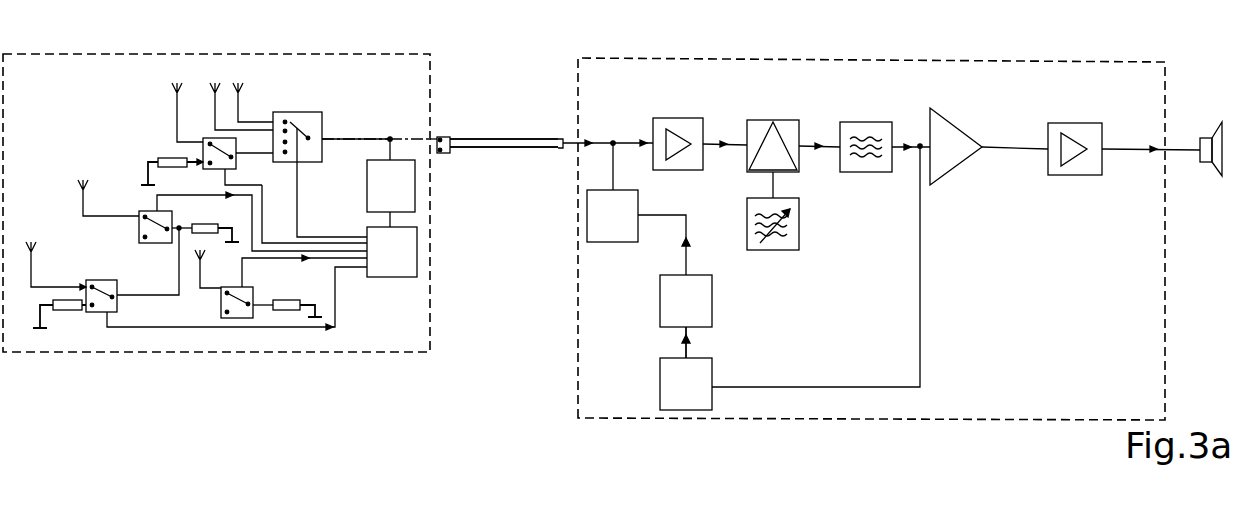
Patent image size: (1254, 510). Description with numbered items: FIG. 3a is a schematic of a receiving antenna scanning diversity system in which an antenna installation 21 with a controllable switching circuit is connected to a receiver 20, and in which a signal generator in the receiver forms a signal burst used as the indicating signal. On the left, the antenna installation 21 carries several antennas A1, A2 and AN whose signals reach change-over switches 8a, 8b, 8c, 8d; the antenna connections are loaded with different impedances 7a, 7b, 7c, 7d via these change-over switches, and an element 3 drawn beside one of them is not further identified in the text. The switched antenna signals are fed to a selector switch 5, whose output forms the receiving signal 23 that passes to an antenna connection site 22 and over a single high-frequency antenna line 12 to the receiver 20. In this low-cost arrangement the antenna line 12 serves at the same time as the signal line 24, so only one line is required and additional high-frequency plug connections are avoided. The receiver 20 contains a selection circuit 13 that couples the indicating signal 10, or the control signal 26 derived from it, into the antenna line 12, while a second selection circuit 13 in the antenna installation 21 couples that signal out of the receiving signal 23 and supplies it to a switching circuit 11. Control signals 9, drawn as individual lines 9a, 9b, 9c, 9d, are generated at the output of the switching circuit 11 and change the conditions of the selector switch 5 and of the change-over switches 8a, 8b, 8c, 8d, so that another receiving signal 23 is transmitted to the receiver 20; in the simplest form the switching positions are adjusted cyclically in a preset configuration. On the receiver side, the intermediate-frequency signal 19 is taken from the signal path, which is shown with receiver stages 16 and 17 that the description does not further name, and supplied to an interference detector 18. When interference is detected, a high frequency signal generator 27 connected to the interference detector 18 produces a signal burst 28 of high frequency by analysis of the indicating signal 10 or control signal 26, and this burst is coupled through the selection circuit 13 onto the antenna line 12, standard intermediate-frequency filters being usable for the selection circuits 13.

The antenna ground connection 3 is at (38, 326).
The selector switch 5 is at (312, 126).
The impedance 7a is at (173, 165).
The impedance 7b is at (203, 225).
The impedance 7c is at (66, 312).
The impedance 7d is at (292, 302).
The change-over switch 8a is at (229, 160).
The change-over switch 8b is at (139, 236).
The change-over switch 8c is at (118, 306).
The change-over switch 8d is at (221, 303).
The control signal 9 is at (323, 199).
The control signal 9a is at (314, 214).
The control signal 9b is at (251, 213).
The control signal 9c is at (238, 307).
The control signal 9d is at (304, 257).
The indicating signal 10 is at (647, 343).
The switching circuit 11 is at (392, 252).
The antenna line 12 is at (551, 129).
The selection circuit 13 is at (502, 190).
The amplifier 16 is at (678, 129).
The output amplifier 17 is at (956, 146).
The interference detector 18 is at (686, 384).
The intermediate-frequency signal 19 is at (386, 147).
The receiver 20 is at (871, 239).
The antenna installation 21 is at (216, 203).
The antenna connection site 22 is at (450, 132).
The receiving signal 23 is at (376, 125).
The signal line 24 is at (504, 143).
The control signal 26 is at (388, 217).
The high frequency signal generator 27 is at (686, 301).
The signal burst 28 is at (664, 245).
The antenna A1 is at (250, 91).
The antenna A2 is at (235, 95).
The antenna AN is at (214, 269).